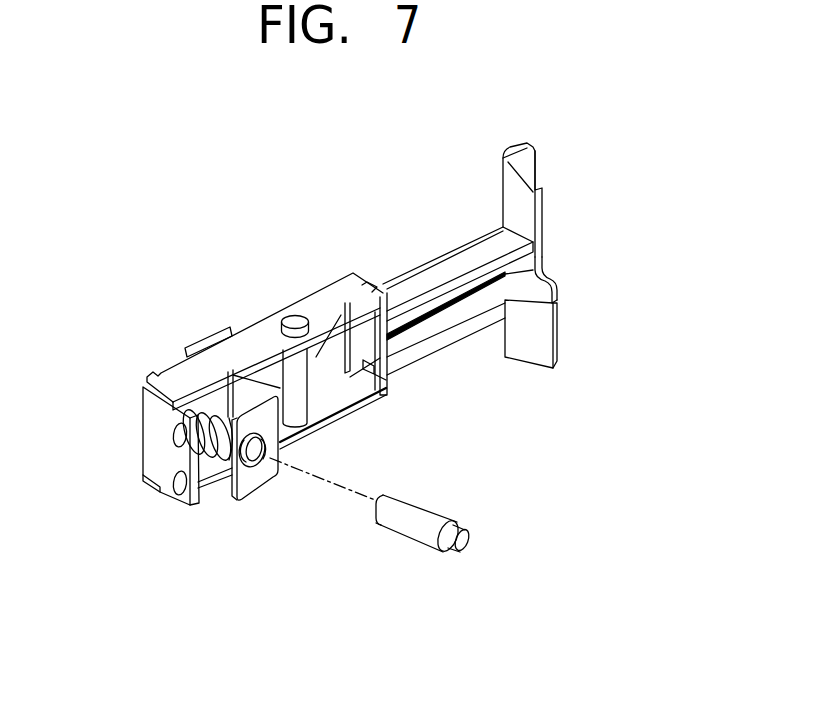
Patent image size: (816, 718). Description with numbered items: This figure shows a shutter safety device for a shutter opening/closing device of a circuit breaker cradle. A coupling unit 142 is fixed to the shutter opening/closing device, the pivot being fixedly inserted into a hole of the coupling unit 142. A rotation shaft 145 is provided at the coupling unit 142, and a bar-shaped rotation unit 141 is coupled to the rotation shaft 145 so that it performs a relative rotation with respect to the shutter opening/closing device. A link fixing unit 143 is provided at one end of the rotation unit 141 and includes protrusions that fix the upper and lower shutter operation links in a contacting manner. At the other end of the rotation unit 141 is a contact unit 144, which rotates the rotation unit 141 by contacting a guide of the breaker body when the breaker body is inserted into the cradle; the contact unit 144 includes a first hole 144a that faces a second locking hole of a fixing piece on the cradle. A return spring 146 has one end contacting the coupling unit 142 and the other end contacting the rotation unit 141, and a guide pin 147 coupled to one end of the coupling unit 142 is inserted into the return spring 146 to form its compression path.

The rotation unit 141 is at (448, 260).
The coupling unit 142 is at (345, 400).
The link fixing unit 143 is at (535, 257).
The contact unit 144 is at (152, 433).
The first hole 144a is at (167, 498).
The rotation shaft 145 is at (293, 322).
The return spring 146 is at (210, 462).
The guide pin 147 is at (407, 525).